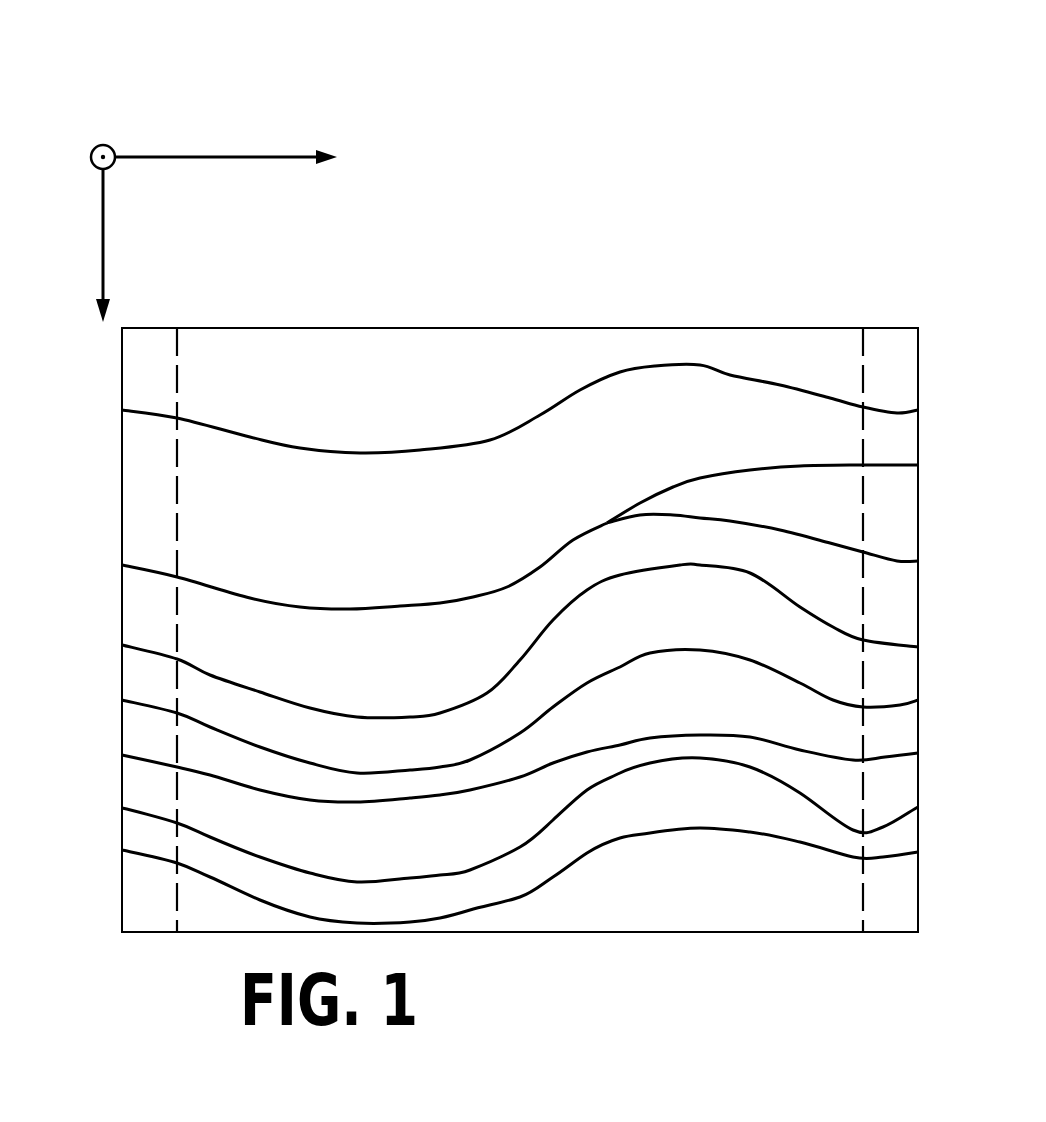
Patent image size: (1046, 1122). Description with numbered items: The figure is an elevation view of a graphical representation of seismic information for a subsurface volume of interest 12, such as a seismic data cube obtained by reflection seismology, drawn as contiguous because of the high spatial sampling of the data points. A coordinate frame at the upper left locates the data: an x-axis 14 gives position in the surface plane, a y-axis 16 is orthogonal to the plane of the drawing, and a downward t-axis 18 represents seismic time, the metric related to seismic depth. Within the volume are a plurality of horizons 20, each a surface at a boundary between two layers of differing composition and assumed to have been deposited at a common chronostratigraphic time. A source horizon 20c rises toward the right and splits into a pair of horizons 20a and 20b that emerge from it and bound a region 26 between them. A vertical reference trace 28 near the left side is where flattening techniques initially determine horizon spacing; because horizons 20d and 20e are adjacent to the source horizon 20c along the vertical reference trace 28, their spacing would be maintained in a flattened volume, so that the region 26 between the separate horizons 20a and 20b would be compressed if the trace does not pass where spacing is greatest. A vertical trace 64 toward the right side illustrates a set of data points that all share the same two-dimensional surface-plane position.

The subsurface volume of interest 12 is at (486, 251).
The x-axis 14 is at (203, 157).
The y-axis 16 is at (103, 143).
The t-axis 18 is at (105, 225).
The horizons 20 is at (612, 742).
The horizon 20a is at (815, 465).
The horizon 20b is at (837, 550).
The source horizon 20c is at (292, 603).
The horizon 20d is at (268, 443).
The horizon 20e is at (380, 715).
The region 26 is at (812, 510).
The vertical reference trace 28 is at (180, 508).
The vertical trace 64 is at (862, 367).